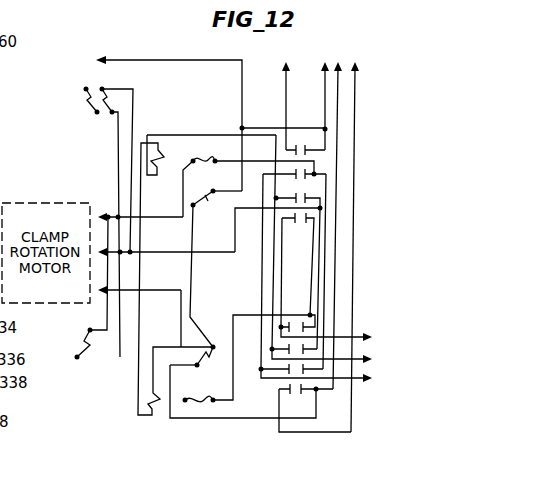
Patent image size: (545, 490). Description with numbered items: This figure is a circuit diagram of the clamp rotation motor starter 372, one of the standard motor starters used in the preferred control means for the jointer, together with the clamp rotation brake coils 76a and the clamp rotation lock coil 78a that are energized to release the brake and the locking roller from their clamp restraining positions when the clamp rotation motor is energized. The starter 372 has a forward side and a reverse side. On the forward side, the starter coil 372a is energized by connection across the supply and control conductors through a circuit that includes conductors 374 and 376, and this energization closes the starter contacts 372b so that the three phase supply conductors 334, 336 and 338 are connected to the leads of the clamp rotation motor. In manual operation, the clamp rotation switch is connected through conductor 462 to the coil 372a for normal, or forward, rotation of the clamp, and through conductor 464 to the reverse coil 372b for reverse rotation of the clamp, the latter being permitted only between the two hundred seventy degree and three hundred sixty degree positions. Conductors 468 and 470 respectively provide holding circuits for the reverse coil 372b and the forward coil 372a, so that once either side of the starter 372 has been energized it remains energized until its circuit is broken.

The conductor 376 is at (113, 56).
The conductor 470 is at (284, 81).
The conductor 462 is at (324, 81).
The conductor 464 is at (342, 82).
The conductor 468 is at (357, 88).
The clamp rotation brake coils 76a is at (92, 108).
The clamp rotation lock coil 78a is at (75, 345).
The clamp rotation motor starter 372 is at (239, 439).
The starter coil 372a is at (217, 203).
The starter contacts 372b is at (354, 181).
The conductor 374 is at (192, 282).
The voltage supply conductor 334 is at (356, 334).
The voltage supply conductor 336 is at (357, 381).
The voltage supply conductor 338 is at (342, 380).